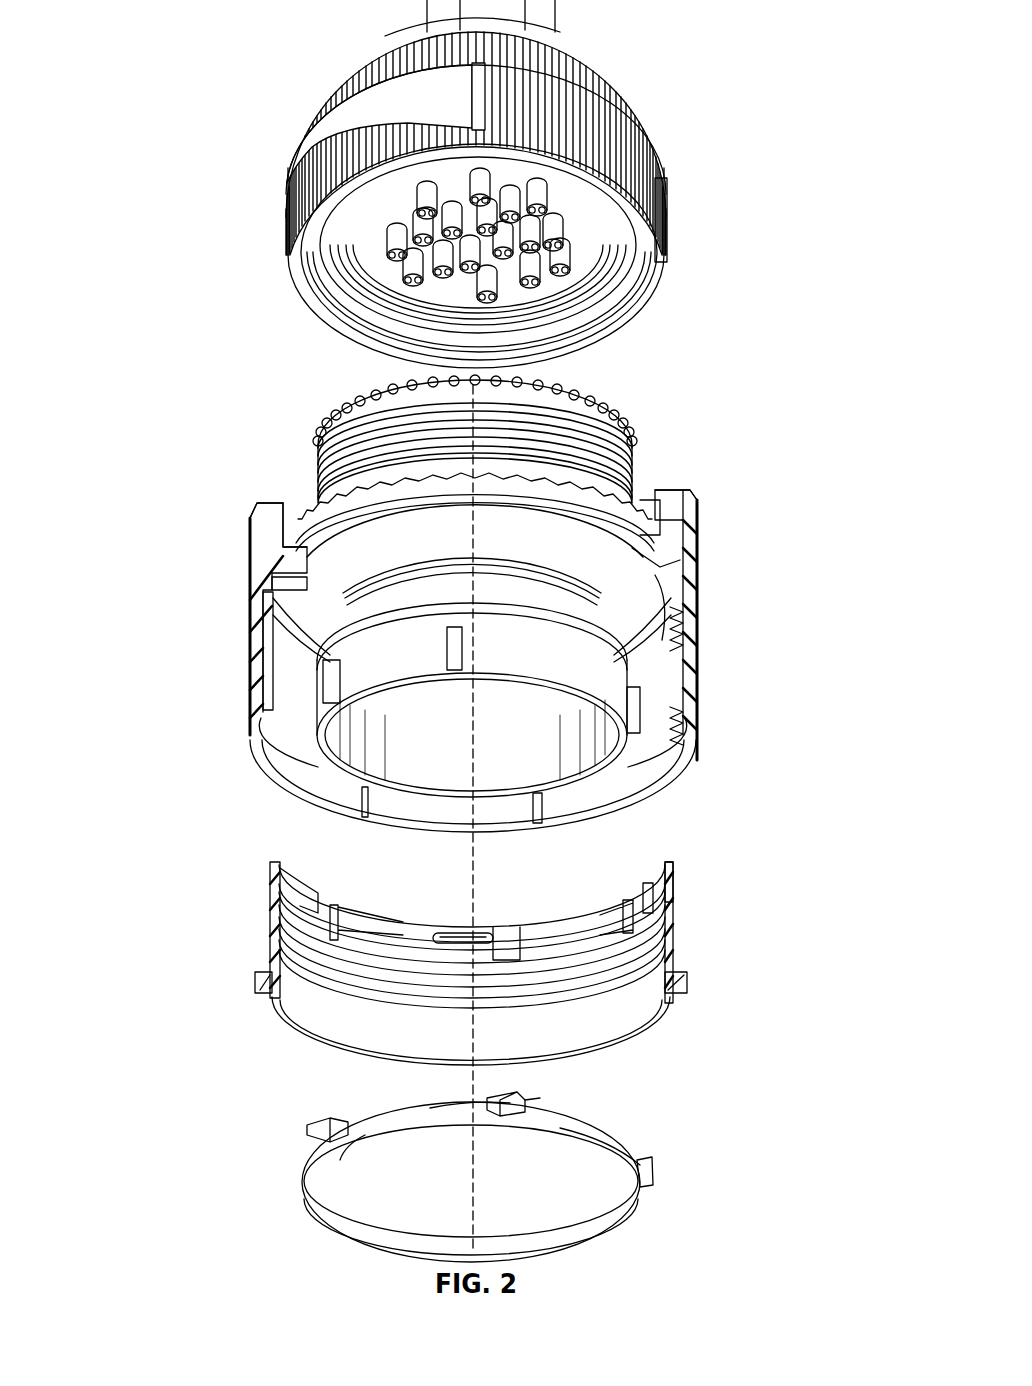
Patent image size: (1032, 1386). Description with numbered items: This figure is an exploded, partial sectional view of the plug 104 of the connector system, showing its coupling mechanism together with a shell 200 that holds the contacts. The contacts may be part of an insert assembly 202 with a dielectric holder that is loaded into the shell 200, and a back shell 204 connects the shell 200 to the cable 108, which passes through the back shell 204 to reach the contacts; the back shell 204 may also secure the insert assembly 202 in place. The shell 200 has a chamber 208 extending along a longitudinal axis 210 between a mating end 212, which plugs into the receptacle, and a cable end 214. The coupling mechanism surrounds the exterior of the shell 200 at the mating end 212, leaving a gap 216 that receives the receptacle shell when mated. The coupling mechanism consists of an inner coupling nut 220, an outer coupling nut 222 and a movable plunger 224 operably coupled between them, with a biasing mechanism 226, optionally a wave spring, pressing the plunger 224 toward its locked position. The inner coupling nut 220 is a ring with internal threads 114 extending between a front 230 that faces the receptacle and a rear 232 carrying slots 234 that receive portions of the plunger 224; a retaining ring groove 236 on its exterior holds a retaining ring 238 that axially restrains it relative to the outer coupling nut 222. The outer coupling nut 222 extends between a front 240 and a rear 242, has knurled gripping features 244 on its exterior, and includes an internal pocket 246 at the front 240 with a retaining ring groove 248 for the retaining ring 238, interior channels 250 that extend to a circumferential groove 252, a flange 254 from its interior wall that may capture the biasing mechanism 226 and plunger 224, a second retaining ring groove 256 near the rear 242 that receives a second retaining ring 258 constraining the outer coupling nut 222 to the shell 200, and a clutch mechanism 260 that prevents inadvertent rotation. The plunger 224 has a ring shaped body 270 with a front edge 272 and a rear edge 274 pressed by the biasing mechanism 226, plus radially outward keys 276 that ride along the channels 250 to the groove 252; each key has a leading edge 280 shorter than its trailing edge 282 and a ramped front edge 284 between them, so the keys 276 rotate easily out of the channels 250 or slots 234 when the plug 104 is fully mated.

The plug 104 is at (786, 246).
The cable 108 is at (400, 32).
The internal threads 114 is at (405, 948).
The shell 200 is at (573, 762).
The insert assembly 202 is at (446, 277).
The back shell 204 is at (290, 178).
The chamber 208 is at (478, 748).
The longitudinal axis 210 is at (477, 893).
The mating end 212 is at (398, 790).
The cable end 214 is at (342, 412).
The gap 216 is at (454, 661).
The inner coupling nut 220 is at (643, 1003).
The outer coupling nut 222 is at (668, 520).
The plunger 224 is at (600, 1138).
The biasing mechanism 226 is at (650, 595).
The front 230 is at (622, 1038).
The rear 232 is at (673, 866).
The slots 234 is at (532, 921).
The retaining ring groove 236 is at (520, 968).
The retaining ring 238 is at (688, 985).
The front 240 is at (643, 798).
The rear 242 is at (645, 500).
The gripping features 244 is at (700, 580).
The internal pocket 246 is at (656, 727).
The retaining ring groove 248 is at (712, 687).
The channels 250 is at (322, 826).
The circumferential groove 252 is at (232, 651).
The flange 254 is at (298, 563).
The second retaining ring groove 256 is at (240, 493).
The second retaining ring 258 is at (298, 482).
The clutch mechanism 260 is at (512, 527).
The body 270 is at (313, 1157).
The front edge 272 is at (363, 1147).
The rear edge 274 is at (367, 1115).
The keys 276 is at (502, 1122).
The leading edge 280 is at (472, 1097).
The trailing edge 282 is at (530, 1108).
The ramped front edge 284 is at (490, 1097).